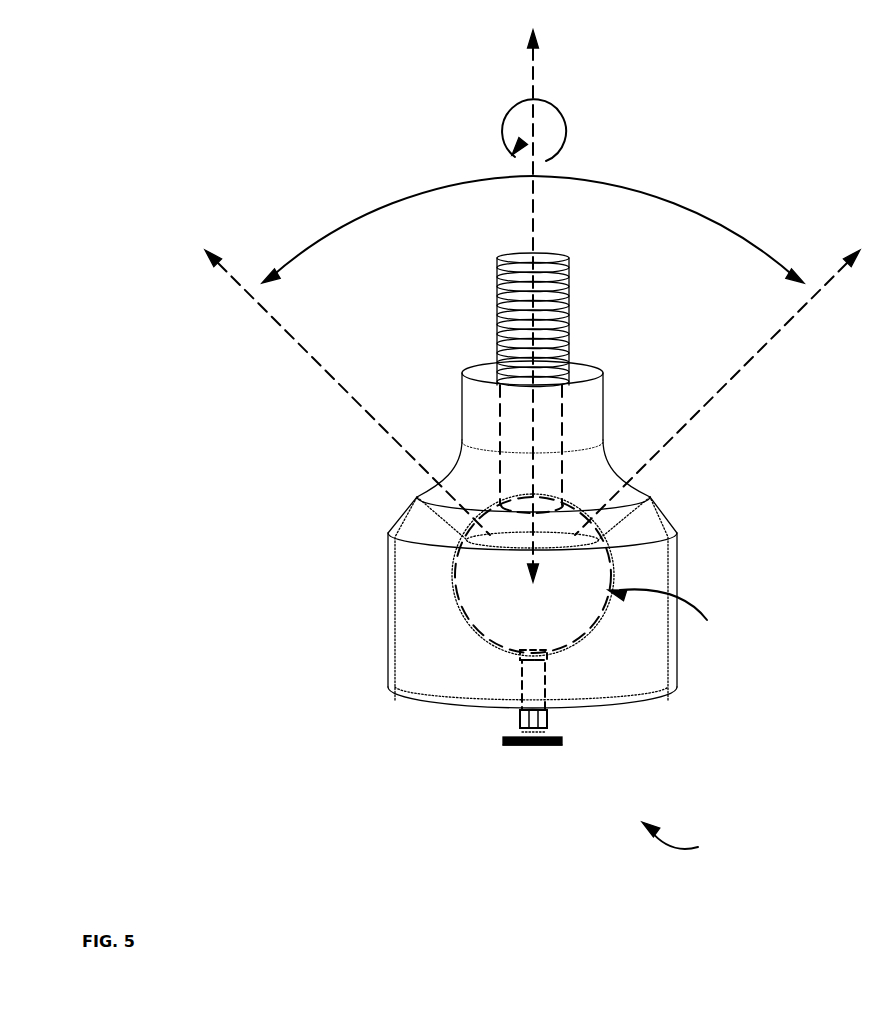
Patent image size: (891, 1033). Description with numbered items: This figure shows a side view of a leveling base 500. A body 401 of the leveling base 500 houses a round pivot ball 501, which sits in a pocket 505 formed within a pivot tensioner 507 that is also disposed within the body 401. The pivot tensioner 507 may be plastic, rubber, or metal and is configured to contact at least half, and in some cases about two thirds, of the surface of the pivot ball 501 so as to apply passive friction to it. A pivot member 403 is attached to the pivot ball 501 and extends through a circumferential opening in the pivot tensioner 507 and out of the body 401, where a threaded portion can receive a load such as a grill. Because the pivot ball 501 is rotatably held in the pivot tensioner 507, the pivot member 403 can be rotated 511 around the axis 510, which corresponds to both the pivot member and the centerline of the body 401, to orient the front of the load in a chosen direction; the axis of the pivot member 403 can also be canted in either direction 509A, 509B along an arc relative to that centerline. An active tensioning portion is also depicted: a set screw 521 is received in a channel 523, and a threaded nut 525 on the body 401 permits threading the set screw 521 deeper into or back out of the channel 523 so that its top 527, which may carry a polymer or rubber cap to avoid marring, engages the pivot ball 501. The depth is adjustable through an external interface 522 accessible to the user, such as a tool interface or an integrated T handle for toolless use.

The leveling base 500 is at (686, 835).
The body 401 is at (672, 537).
The pivot member 403 is at (567, 308).
The pivot ball 501 is at (593, 618).
The pocket 505 is at (674, 614).
The pivot tensioner 507 is at (653, 680).
The canting direction 509A is at (618, 183).
The canting direction 509B is at (458, 180).
The axis 510 is at (536, 80).
The rotation 511 is at (567, 130).
The set screw 521 is at (540, 733).
The external interface 522 is at (515, 746).
The channel 523 is at (545, 693).
The threaded nut 525 is at (547, 717).
The top of the set screw 527 is at (547, 658).